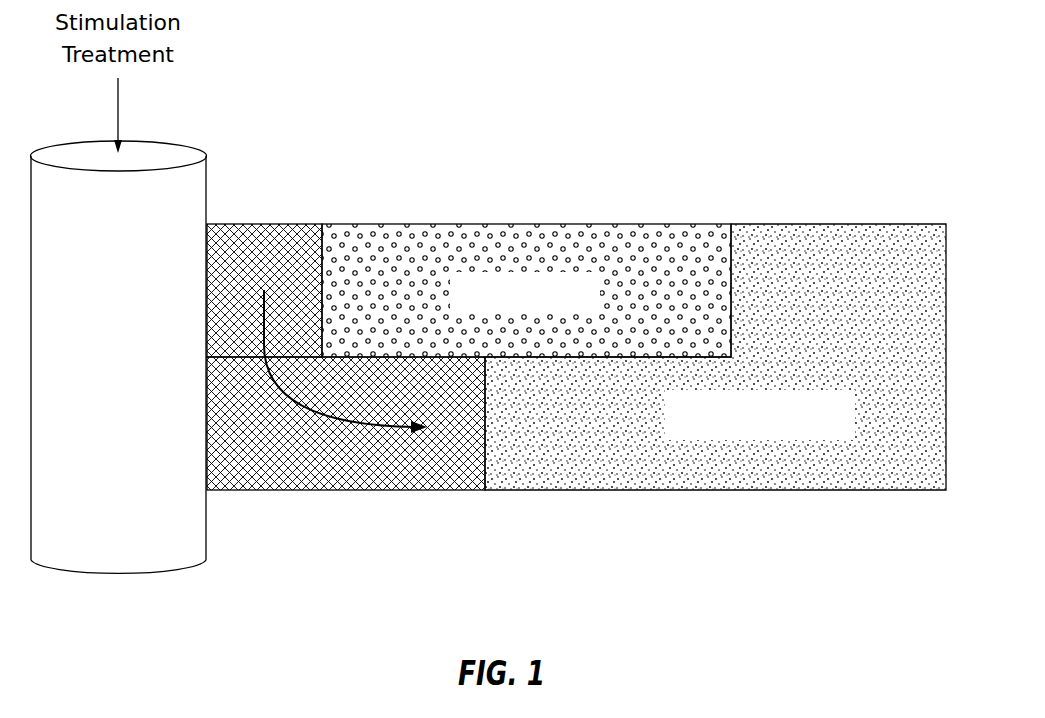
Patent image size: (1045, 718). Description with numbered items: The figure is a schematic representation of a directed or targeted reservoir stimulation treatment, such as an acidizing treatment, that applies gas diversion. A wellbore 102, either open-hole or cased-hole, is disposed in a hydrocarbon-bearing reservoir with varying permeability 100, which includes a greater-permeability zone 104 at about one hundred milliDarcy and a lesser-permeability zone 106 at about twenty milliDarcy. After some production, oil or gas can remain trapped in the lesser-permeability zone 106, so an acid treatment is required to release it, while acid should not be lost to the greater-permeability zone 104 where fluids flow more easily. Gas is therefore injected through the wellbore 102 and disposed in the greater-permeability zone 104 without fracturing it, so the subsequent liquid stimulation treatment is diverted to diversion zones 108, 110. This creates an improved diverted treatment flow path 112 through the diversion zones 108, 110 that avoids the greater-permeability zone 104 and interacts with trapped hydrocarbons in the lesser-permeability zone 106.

The hydrocarbon-bearing reservoir with varying permeability 100 is at (786, 96).
The wellbore 102 is at (141, 401).
The greater-permeability zone 104 is at (548, 230).
The lesser-permeability zone 106 is at (840, 232).
The diversion zone 108 is at (262, 230).
The diversion zone 110 is at (246, 483).
The diverted treatment flow path 112 is at (323, 420).